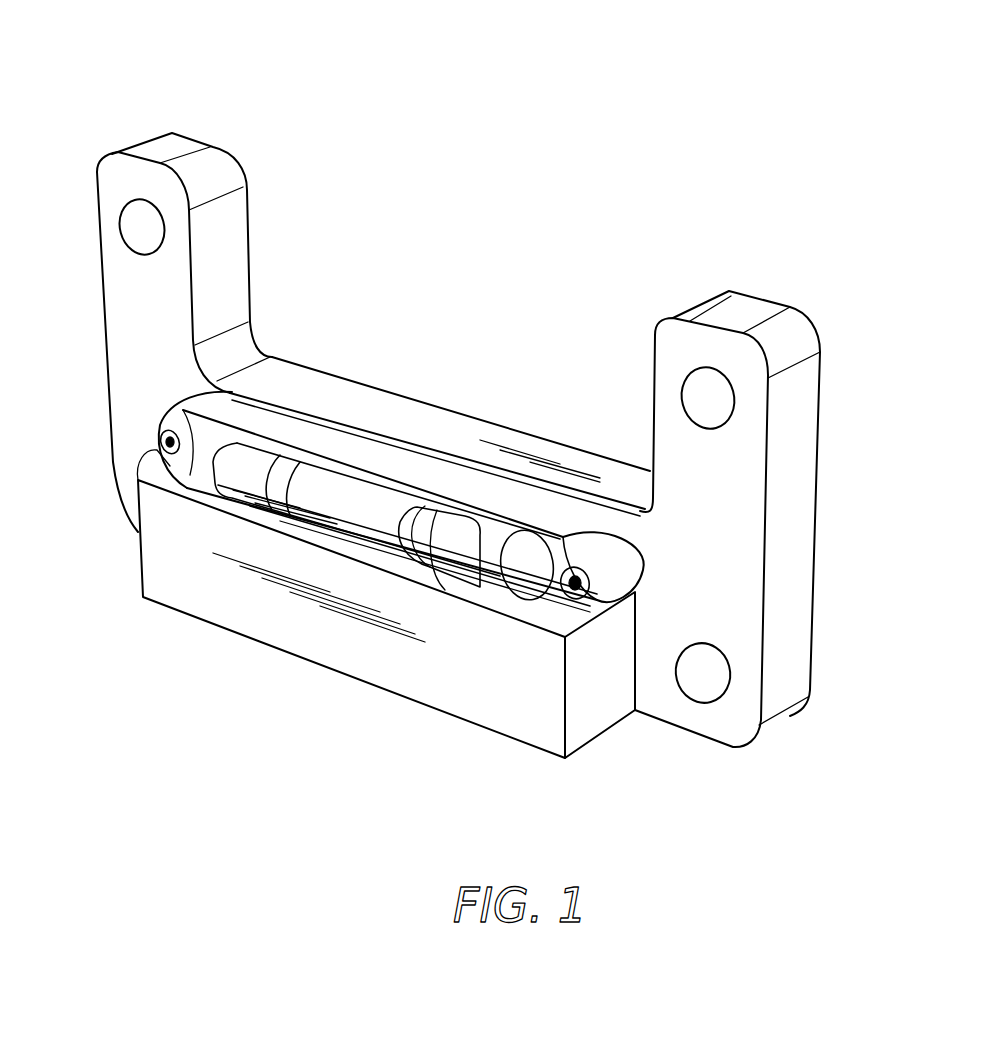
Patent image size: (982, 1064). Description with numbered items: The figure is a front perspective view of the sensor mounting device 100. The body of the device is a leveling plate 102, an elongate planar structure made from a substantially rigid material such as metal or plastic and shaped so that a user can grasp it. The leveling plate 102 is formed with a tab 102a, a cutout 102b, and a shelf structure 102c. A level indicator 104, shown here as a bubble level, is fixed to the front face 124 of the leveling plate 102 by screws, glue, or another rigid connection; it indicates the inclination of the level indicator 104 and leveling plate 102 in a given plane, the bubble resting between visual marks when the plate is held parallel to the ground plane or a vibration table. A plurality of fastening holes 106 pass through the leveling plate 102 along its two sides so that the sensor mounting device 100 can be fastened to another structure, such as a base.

The sensor mounting device 100 is at (639, 198).
The leveling plate 102 is at (759, 307).
The tab 102a is at (134, 184).
The cutout 102b is at (362, 328).
The shelf structure 102c is at (378, 653).
The level indicator 104 is at (357, 460).
The fastening holes 106 is at (723, 410).
The front face 124 is at (720, 550).